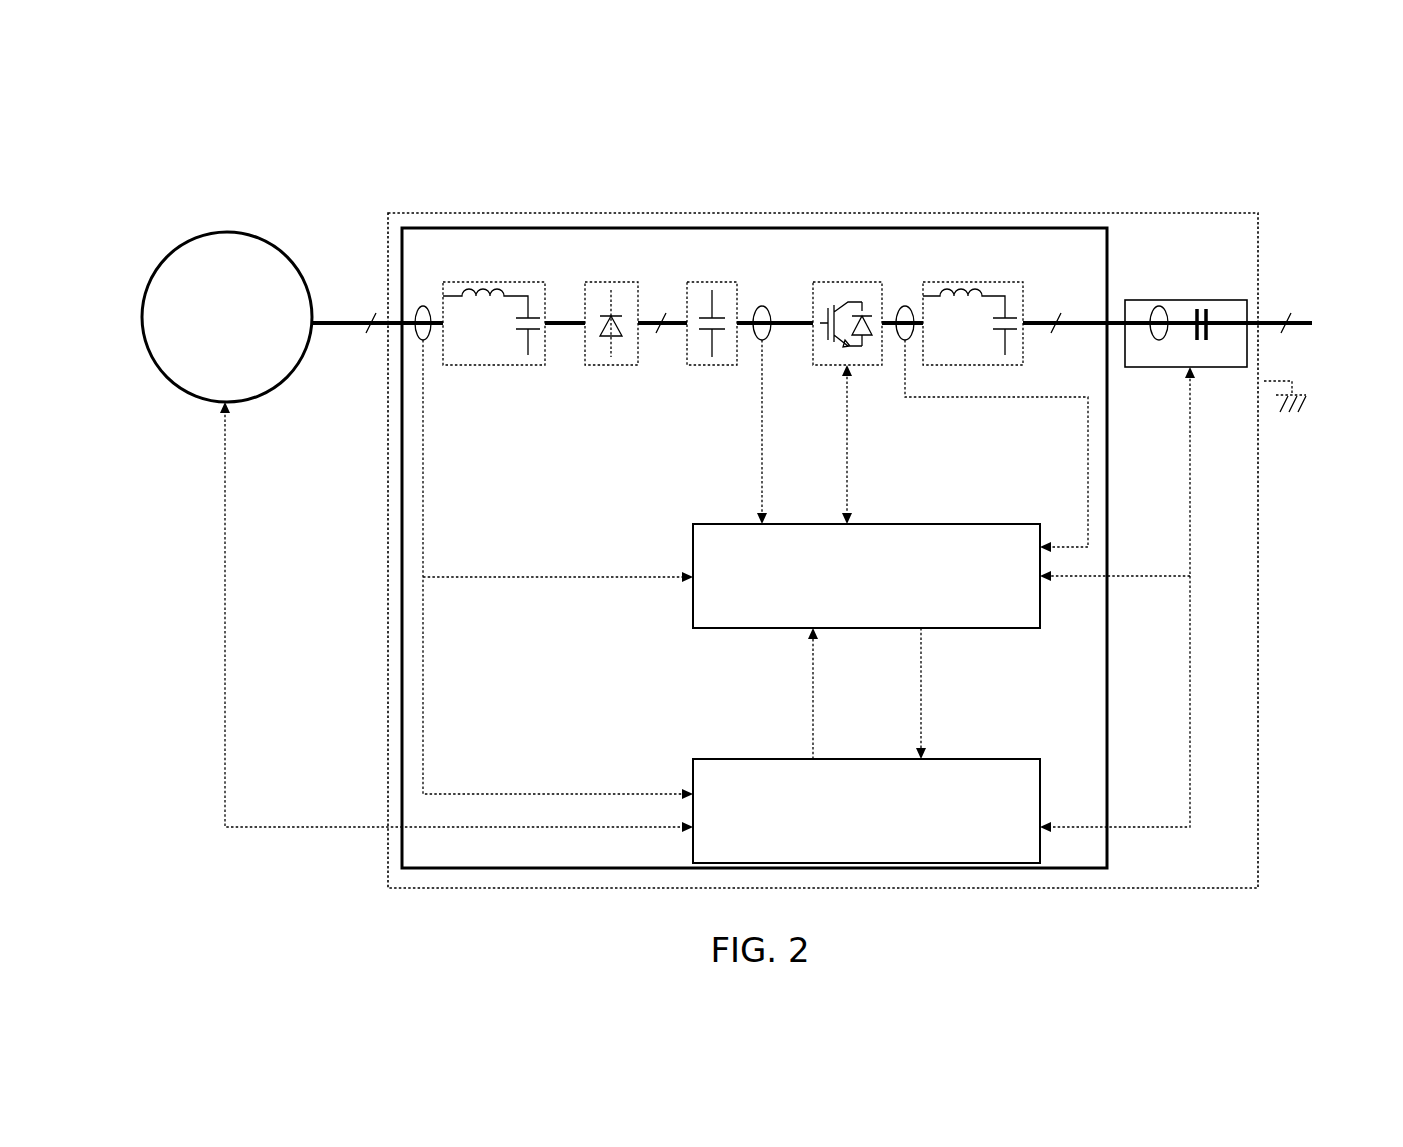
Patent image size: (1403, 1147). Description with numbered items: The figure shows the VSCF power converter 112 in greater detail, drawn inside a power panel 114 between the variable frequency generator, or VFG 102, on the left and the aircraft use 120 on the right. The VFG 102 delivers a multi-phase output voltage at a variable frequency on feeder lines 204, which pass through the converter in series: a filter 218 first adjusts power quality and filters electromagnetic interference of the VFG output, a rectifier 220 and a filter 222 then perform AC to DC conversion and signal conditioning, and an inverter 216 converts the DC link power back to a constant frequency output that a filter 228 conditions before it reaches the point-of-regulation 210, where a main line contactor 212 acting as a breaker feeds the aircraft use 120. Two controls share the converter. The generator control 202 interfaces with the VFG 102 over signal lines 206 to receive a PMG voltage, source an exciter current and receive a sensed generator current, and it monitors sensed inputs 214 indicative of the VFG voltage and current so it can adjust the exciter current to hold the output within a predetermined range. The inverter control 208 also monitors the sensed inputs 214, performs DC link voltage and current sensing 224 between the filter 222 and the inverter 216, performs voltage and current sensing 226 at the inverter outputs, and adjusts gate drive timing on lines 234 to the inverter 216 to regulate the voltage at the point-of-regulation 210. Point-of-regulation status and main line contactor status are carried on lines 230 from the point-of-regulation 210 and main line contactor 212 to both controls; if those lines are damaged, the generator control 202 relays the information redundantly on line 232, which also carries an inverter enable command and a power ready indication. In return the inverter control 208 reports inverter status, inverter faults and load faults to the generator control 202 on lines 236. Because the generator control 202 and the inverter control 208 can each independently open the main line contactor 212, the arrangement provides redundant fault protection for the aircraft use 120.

The VFG 102 is at (227, 317).
The VSCF power converter 112 is at (736, 228).
The power panel 114 is at (1128, 213).
The aircraft use 120 is at (1323, 331).
The generator control 202 is at (693, 766).
The feeder lines 204 is at (318, 322).
The signal lines 206 is at (260, 826).
The inverter control 208 is at (693, 536).
The point-of-regulation 210 is at (1160, 368).
The main line contactor 212 is at (1205, 368).
The sensed inputs 214 is at (423, 525).
The inverter 216 is at (816, 366).
The filter 218 is at (531, 366).
The rectifier 220 is at (620, 366).
The filter 222 is at (697, 366).
The DC link voltage and current sensing 224 is at (758, 497).
The voltage and current sensing 226 is at (990, 398).
The filter 228 is at (1025, 356).
The lines 230 is at (1190, 768).
The line 232 is at (813, 654).
The lines 234 is at (846, 486).
The lines 236 is at (920, 720).